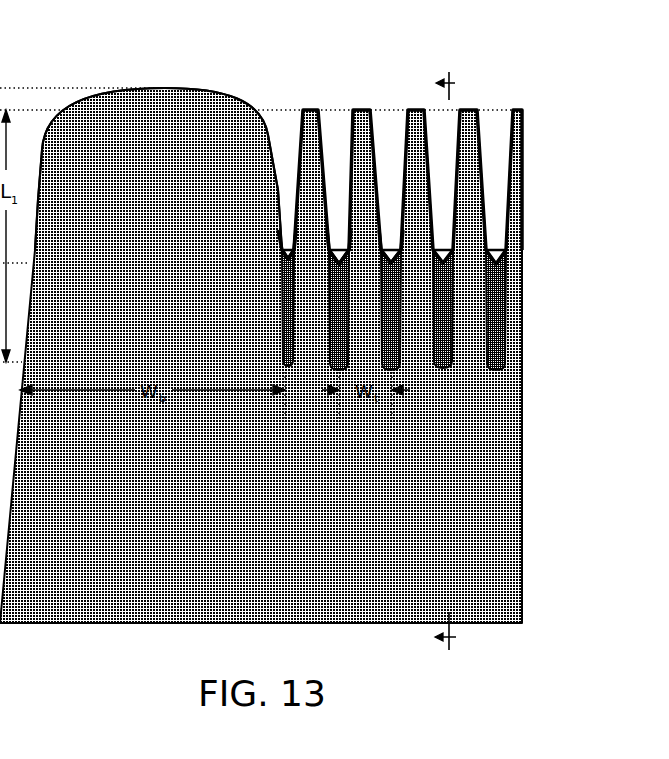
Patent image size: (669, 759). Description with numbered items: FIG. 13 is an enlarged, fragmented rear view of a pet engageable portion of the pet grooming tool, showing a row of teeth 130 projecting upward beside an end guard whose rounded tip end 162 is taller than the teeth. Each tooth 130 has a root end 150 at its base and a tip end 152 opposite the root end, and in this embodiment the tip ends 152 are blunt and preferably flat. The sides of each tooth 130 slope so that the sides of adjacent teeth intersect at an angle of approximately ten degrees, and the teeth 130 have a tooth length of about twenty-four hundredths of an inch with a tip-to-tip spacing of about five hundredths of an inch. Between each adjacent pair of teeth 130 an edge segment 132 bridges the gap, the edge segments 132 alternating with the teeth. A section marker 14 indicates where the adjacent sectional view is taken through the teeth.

The tooth 130 is at (261, 355).
The edge segment 132 is at (391, 260).
The root end 150 is at (284, 365).
The tip end 152 is at (415, 108).
The tip end of end guard 162 is at (165, 89).
The section line for FIG. 14 is at (443, 360).